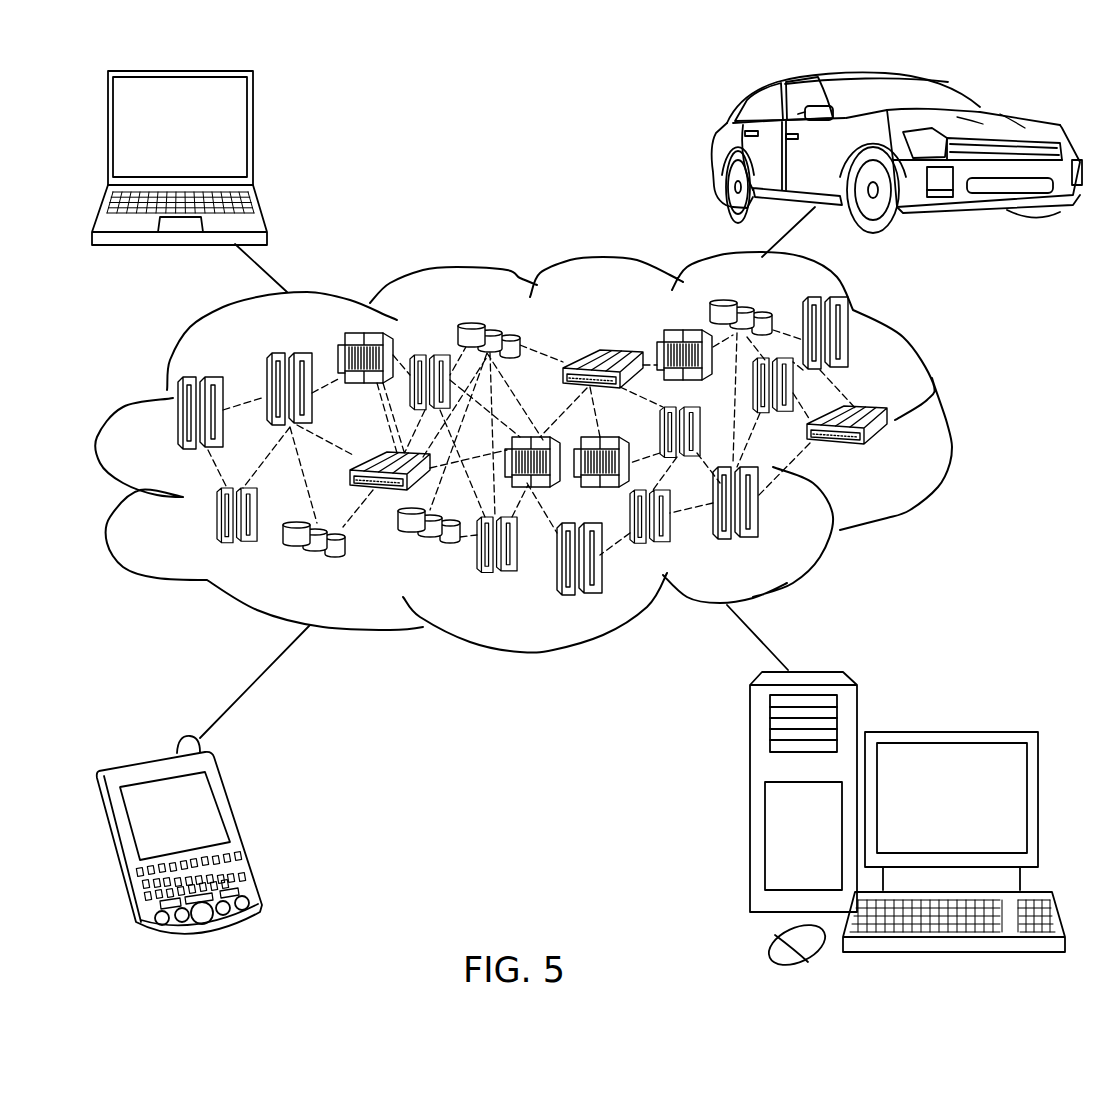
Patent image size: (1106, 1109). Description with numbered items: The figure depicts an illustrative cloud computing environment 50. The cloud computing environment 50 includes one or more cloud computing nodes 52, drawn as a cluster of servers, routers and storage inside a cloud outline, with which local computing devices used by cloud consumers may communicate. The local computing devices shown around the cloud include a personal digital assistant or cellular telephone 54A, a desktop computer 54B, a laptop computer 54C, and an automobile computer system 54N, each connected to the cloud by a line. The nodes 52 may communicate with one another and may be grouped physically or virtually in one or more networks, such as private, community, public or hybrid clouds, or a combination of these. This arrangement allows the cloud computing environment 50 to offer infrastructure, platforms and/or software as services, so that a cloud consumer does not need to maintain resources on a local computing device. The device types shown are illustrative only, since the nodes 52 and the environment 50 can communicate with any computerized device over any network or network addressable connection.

The cloud computing environment 50 is at (948, 423).
The cloud computing nodes 52 is at (890, 458).
The personal digital assistant or cellular telephone 54A is at (240, 830).
The desktop computer 54B is at (948, 732).
The laptop computer 54C is at (253, 134).
The automobile computer system 54N is at (720, 152).